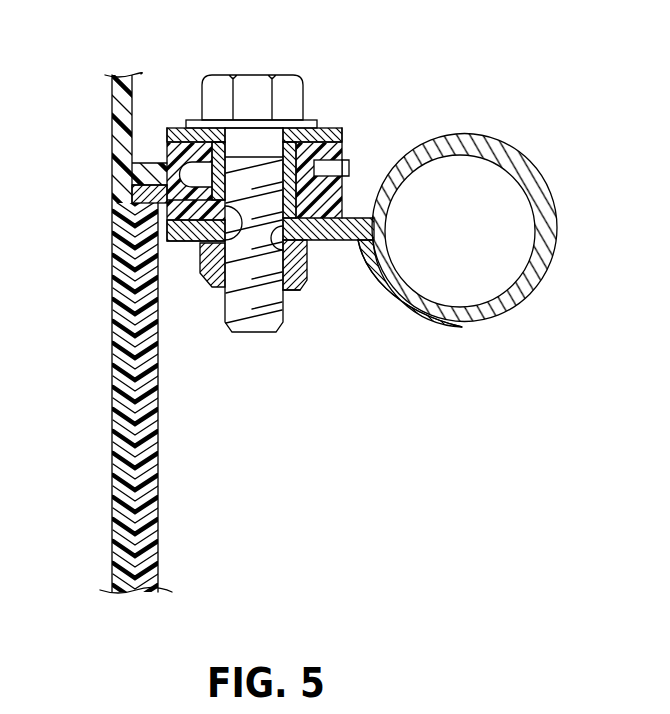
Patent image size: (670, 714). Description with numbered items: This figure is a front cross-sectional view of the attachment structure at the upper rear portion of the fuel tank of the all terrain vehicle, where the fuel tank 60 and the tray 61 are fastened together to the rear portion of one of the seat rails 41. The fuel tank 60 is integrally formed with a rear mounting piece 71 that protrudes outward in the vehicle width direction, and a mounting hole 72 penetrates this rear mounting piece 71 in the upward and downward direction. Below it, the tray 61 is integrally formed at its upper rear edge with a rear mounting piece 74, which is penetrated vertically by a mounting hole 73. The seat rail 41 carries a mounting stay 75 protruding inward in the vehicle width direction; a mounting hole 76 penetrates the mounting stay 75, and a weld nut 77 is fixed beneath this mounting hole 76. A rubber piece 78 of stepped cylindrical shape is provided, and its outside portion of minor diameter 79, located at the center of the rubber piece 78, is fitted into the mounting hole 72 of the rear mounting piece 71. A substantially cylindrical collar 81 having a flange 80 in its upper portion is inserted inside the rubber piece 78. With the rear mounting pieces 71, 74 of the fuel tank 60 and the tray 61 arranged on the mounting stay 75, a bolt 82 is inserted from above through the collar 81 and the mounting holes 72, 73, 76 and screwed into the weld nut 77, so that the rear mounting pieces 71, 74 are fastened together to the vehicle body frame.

The seat rail 41 is at (557, 226).
The fuel tank 60 is at (112, 101).
The tray 61 is at (150, 568).
The rear mounting piece 71 is at (347, 172).
The mounting hole 72 is at (198, 189).
The mounting hole 73 is at (205, 241).
The rear mounting piece 74 is at (370, 214).
The mounting stay 75 is at (358, 232).
The mounting hole 76 is at (307, 255).
The weld nut 77 is at (307, 272).
The rubber piece 78 is at (355, 147).
The outside portion of minor diameter 79 is at (343, 163).
The flange 80 is at (343, 132).
The collar 81 is at (335, 118).
The bolt 82 is at (248, 87).